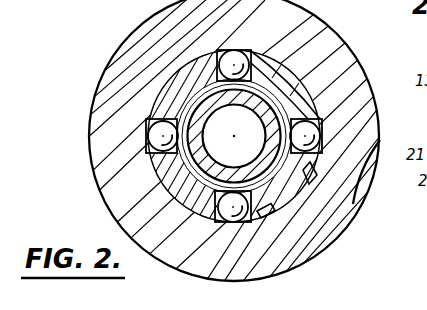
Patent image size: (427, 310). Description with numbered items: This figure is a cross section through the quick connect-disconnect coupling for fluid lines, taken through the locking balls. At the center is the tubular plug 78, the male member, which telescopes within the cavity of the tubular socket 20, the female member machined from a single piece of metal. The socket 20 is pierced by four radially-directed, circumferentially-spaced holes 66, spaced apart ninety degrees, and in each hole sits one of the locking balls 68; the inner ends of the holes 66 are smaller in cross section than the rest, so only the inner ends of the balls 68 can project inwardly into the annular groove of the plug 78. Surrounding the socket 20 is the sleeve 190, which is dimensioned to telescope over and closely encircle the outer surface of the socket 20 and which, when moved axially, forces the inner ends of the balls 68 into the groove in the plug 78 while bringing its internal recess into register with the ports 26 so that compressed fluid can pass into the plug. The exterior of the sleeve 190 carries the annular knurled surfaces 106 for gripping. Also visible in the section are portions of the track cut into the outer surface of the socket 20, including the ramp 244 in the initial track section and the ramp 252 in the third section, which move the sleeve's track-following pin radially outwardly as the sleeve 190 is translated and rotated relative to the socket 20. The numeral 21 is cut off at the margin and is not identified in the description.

The tubular socket 20 is at (121, 223).
The annular knurled surfaces 106 is at (358, 208).
The sleeve 190 is at (96, 72).
The tubular plug 78 is at (192, 112).
The radially-directed holes 66 is at (161, 194).
The locking balls 68 is at (150, 135).
The ramp 244 is at (307, 180).
The ramp 252 is at (265, 218).
The shaft 21 is at (316, 6).
The ports 26 is at (367, 7).